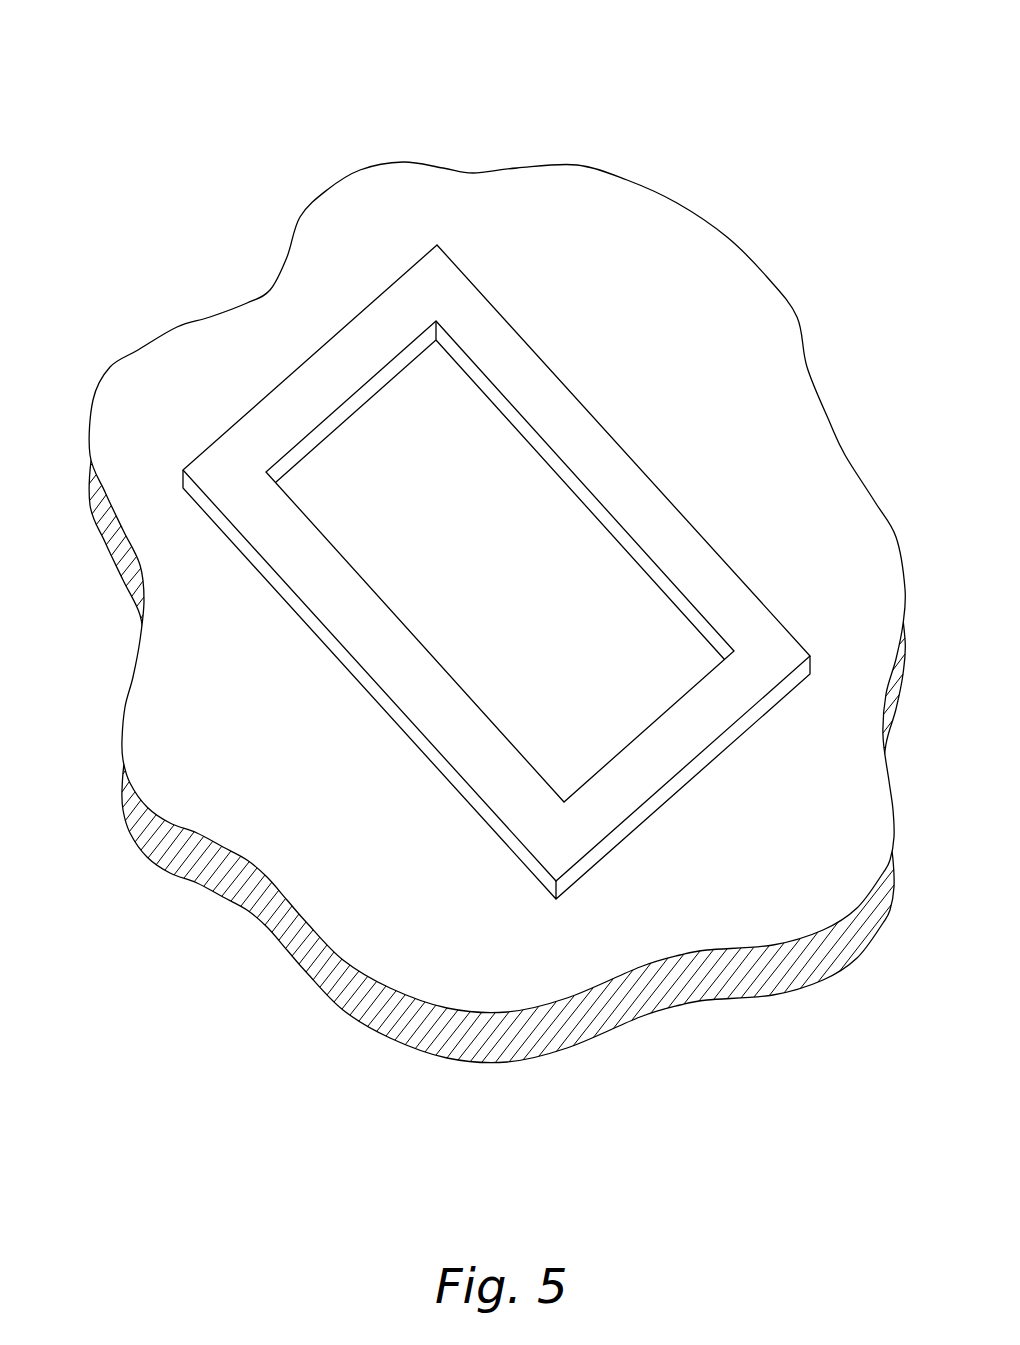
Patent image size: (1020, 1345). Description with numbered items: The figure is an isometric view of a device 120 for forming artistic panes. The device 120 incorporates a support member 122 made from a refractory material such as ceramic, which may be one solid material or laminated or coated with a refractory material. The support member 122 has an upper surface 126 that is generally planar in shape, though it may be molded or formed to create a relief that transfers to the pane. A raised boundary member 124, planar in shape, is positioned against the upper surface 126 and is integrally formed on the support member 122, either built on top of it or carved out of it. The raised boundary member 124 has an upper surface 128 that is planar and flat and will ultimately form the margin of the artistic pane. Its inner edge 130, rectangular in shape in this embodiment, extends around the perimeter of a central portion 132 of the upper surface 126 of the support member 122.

The device 120 is at (173, 80).
The support member 122 is at (138, 350).
The raised boundary member 124 is at (292, 373).
The upper surface 126 is at (236, 707).
The upper surface 128 is at (283, 524).
The inner edge 130 is at (652, 572).
The central portion 132 is at (470, 525).